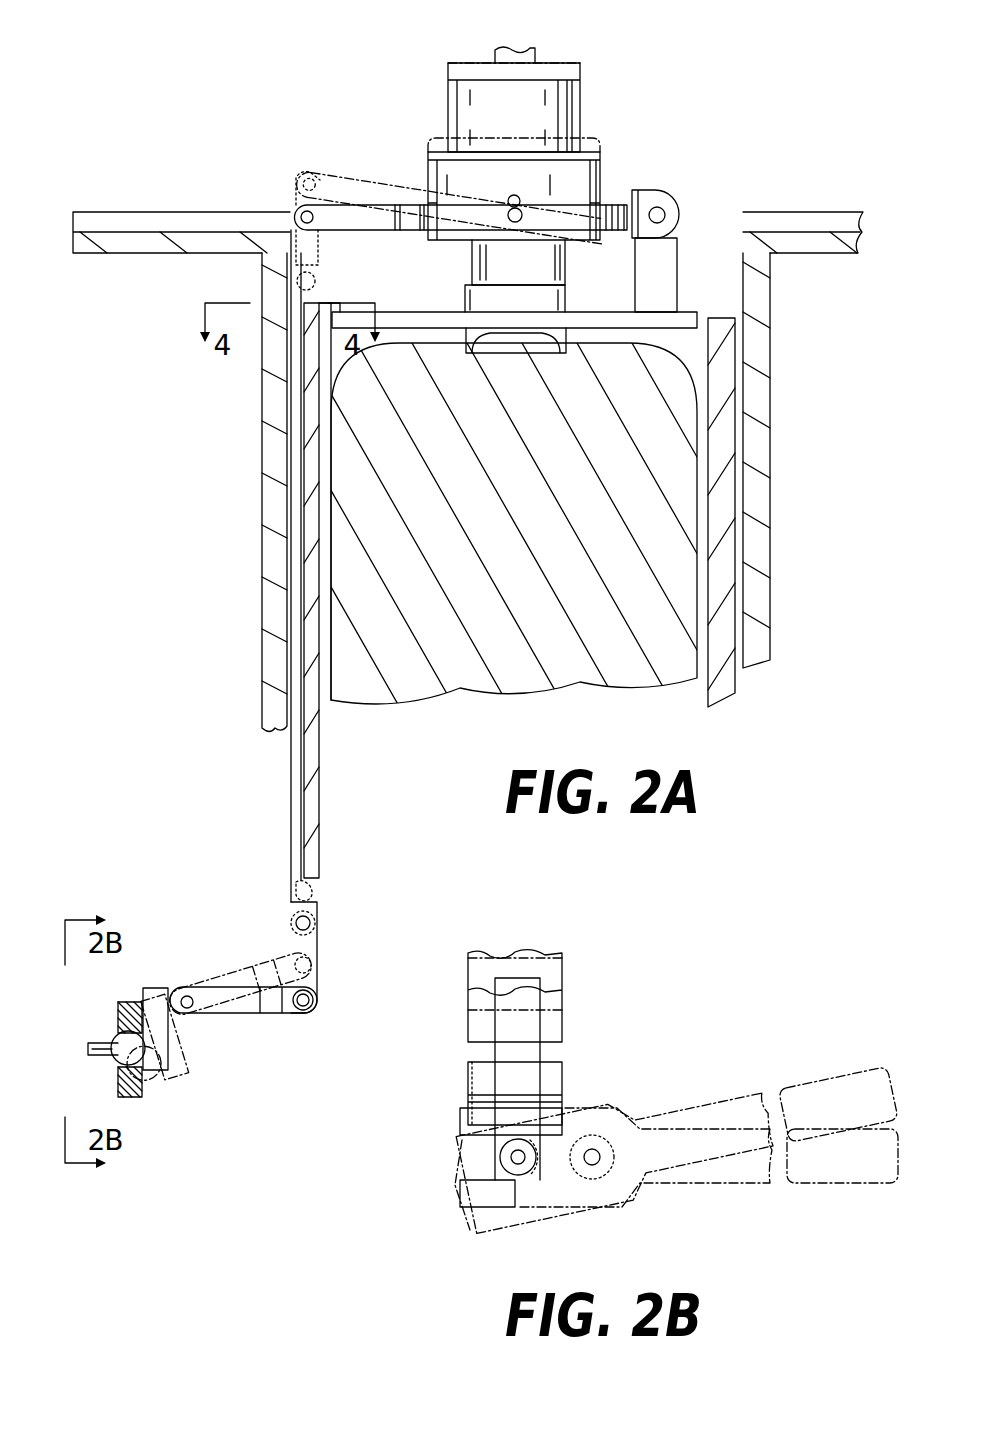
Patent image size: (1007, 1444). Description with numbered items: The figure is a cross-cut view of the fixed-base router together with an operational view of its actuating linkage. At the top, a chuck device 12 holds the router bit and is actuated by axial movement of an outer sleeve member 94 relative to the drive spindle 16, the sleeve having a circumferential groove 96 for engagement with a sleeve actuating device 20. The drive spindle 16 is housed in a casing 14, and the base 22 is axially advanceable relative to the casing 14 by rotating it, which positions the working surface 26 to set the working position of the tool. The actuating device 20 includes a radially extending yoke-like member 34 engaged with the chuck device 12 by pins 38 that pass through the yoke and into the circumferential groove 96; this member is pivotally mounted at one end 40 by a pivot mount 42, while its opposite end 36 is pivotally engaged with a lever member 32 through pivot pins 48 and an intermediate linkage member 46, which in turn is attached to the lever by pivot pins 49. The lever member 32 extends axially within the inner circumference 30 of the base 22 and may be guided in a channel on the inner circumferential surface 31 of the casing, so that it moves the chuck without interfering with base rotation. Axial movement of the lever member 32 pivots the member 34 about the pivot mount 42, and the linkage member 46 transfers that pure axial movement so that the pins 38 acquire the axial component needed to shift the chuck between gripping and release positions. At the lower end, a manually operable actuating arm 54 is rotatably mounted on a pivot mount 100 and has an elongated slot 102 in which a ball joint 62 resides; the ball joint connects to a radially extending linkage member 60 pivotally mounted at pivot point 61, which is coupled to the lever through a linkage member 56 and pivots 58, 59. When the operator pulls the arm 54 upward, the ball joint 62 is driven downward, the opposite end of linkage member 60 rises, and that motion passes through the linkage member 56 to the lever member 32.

In FIG. 2A, the chuck device 12 is at (566, 44).
In FIG. 2A, the casing 14 is at (319, 790).
In FIG. 2A, the drive spindle 16 is at (480, 258).
In FIG. 2A, the sleeve actuating device 20 is at (407, 130).
In FIG. 2A, the base 22 is at (775, 375).
In FIG. 2A, the working surface 26 is at (806, 212).
In FIG. 2A, the inner circumference 30 is at (272, 690).
In FIG. 2A, the inner circumferential surface 31 is at (320, 752).
In FIG. 2A, the lever member 32 is at (291, 790).
In FIG. 2B, the lever member 32 is at (562, 978).
In FIG. 2A, the radially extending member 34 is at (575, 195).
In FIG. 2A, the end 36 is at (345, 200).
In FIG. 2A, the pins 38 is at (522, 222).
In FIG. 2A, the end 40 is at (685, 205).
In FIG. 2A, the pivot mount 42 is at (660, 204).
In FIG. 2A, the linkage member 46 is at (300, 235).
In FIG. 2A, the pivot pins 48 is at (300, 197).
In FIG. 2A, the pivot pins 49 is at (298, 283).
In FIG. 2B, the actuating arm 54 is at (743, 1163).
In FIG. 2A, the linkage member 56 is at (292, 935).
In FIG. 2B, the linkage member 56 is at (532, 1050).
In FIG. 2A, the pivot 58 is at (313, 1000).
In FIG. 2A, the pivot 59 is at (315, 923).
In FIG. 2A, the radially extending linkage member 60 is at (235, 1013).
In FIG. 2A, the pivot point 61 is at (188, 994).
In FIG. 2A, the ball joint 62 is at (118, 1035).
In FIG. 2B, the ball joint 62 is at (528, 1174).
In FIG. 2A, the outer sleeve member 94 is at (590, 94).
In FIG. 2A, the circumferential groove 96 is at (430, 214).
In FIG. 2B, the pivot mount 100 is at (592, 1180).
In FIG. 2B, the elongated slot 102 is at (475, 1174).